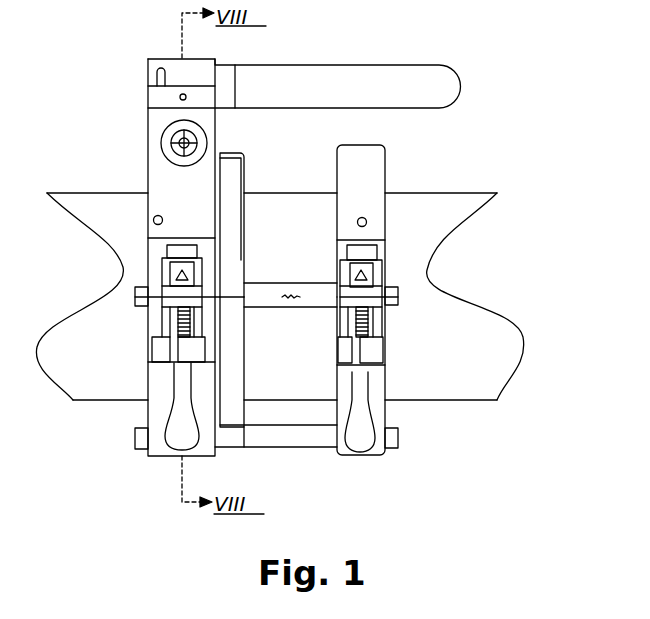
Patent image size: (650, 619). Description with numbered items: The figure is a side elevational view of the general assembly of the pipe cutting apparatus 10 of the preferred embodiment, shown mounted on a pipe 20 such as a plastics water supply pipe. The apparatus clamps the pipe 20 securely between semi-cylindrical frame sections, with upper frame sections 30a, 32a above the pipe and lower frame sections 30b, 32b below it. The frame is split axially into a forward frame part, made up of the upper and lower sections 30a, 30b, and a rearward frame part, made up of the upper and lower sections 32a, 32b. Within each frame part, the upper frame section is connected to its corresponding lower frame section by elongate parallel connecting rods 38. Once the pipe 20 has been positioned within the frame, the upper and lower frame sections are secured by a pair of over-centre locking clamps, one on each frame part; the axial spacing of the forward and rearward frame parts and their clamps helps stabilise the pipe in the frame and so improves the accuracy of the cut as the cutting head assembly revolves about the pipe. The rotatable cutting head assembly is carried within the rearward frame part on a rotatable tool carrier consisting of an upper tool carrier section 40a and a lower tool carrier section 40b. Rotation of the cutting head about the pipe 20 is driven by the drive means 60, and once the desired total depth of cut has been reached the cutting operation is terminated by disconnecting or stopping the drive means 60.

The pipe cutting apparatus 10 is at (125, 466).
The pipe 20 is at (487, 370).
The upper forward frame section 30a is at (385, 184).
The lower forward frame section 30b is at (380, 453).
The upper rearward frame section 32a is at (183, 193).
The lower rearward frame section 32b is at (160, 410).
The connecting rods 38 is at (262, 445).
The upper tool carrier section 40a is at (247, 213).
The lower tool carrier section 40b is at (232, 358).
The drive means 60 is at (160, 130).